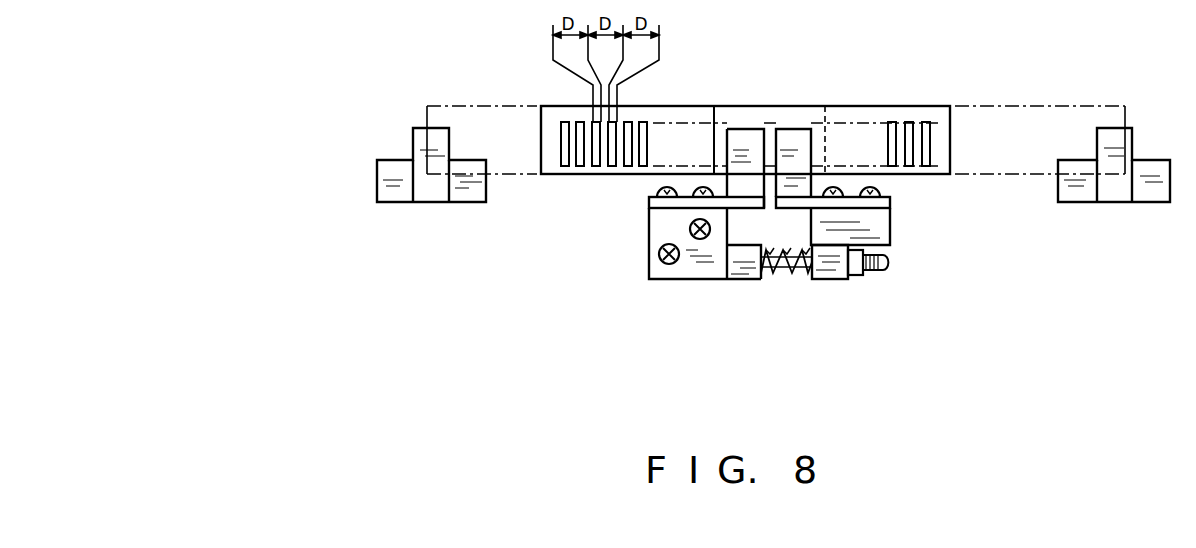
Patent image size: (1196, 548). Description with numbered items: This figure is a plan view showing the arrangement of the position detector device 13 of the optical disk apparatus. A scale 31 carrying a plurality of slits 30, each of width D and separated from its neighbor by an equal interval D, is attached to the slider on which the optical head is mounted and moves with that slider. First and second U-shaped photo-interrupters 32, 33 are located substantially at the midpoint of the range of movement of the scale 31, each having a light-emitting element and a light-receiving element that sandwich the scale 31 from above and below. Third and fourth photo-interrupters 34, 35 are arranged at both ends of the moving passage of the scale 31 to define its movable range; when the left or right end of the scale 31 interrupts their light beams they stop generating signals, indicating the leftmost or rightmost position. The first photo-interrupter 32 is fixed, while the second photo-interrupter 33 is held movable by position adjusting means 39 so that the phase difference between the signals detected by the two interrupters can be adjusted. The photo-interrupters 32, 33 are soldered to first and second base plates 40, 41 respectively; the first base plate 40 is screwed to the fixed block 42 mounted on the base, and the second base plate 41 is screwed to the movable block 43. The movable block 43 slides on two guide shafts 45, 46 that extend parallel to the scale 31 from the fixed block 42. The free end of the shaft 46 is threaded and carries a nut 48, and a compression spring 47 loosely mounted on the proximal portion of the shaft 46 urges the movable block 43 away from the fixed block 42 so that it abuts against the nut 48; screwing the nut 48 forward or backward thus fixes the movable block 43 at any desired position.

The fastening mechanism assembly 13 is at (953, 217).
The slots 30 is at (565, 167).
The scale 31 is at (508, 106).
The first photo-interrupter 32 is at (745, 128).
The second photo-interrupter 33 is at (795, 128).
The third photo-interrupter 34 is at (433, 196).
The fourth photo-interrupter 35 is at (1118, 196).
The position adjusting means 39 is at (835, 282).
The first base plate 40 is at (648, 205).
The second base plate 41 is at (890, 201).
The block 42 is at (655, 243).
The movable block 43 is at (890, 233).
The guide shaft 45 is at (773, 276).
The guide shaft 46 is at (784, 276).
The compression spring 47 is at (793, 276).
The nut 48 is at (857, 272).